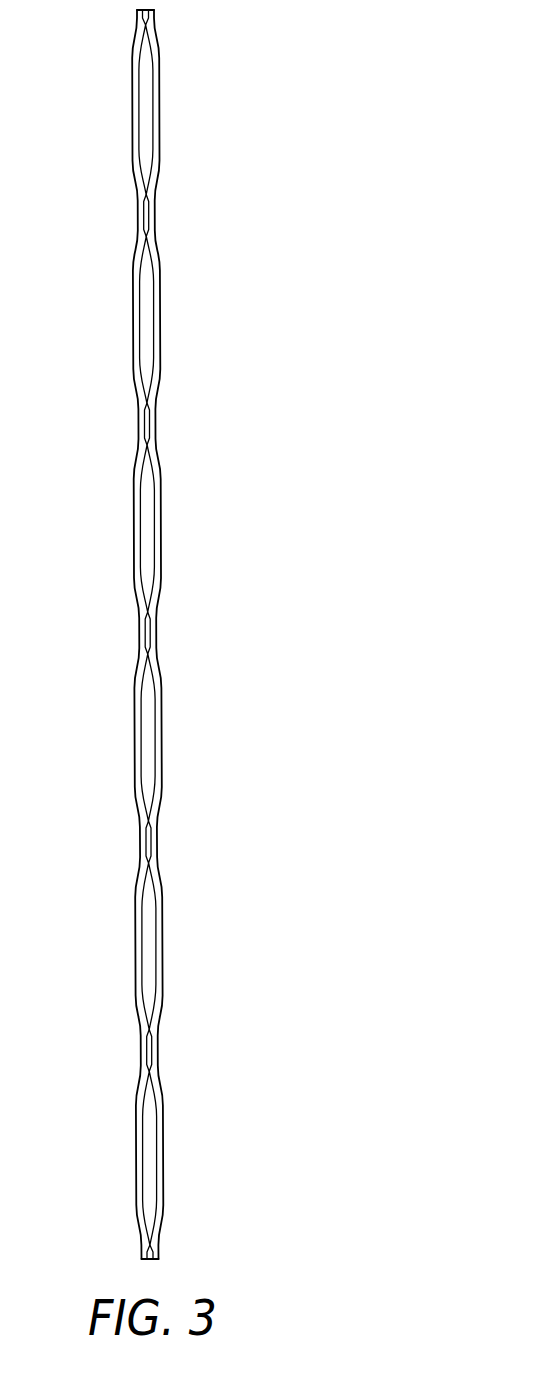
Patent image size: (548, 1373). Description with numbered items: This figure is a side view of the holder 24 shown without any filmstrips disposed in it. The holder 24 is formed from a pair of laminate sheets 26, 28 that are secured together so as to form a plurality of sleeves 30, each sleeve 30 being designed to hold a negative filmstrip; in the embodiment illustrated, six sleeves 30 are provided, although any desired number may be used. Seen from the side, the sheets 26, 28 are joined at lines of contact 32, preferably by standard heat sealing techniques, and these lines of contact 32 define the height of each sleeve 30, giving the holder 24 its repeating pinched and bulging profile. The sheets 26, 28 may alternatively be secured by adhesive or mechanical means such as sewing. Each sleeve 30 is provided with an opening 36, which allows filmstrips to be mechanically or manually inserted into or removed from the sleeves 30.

The holder 24 is at (248, 629).
The laminate sheet 26 is at (134, 987).
The laminate sheet 28 is at (163, 992).
The sleeve 30 is at (149, 634).
The line of contact 32 is at (154, 10).
The opening 36 is at (149, 82).